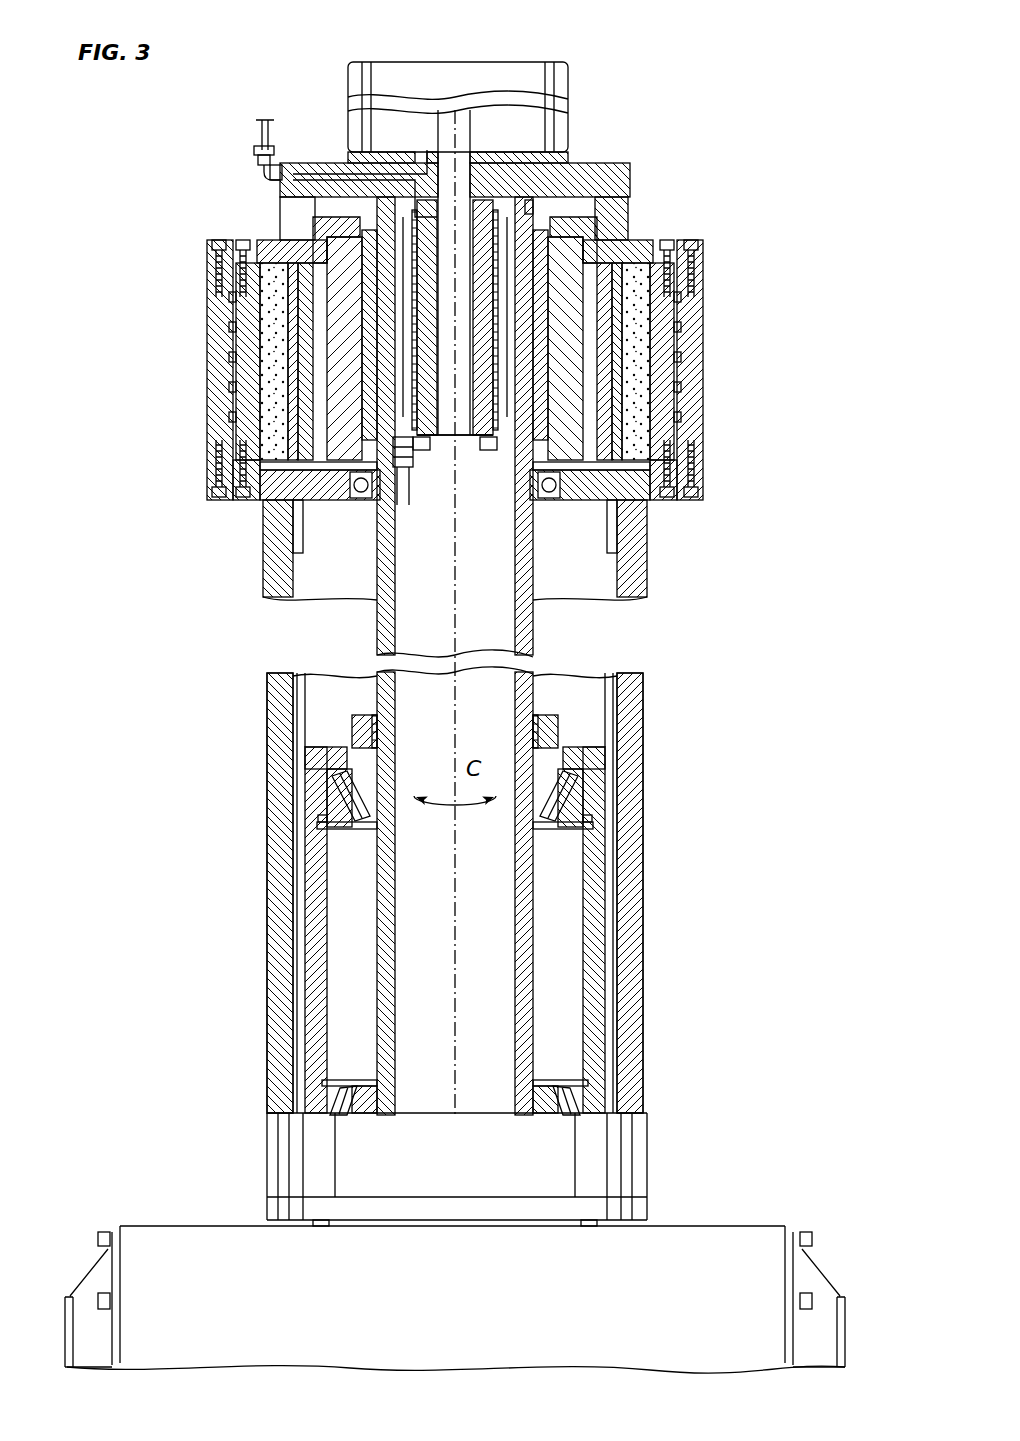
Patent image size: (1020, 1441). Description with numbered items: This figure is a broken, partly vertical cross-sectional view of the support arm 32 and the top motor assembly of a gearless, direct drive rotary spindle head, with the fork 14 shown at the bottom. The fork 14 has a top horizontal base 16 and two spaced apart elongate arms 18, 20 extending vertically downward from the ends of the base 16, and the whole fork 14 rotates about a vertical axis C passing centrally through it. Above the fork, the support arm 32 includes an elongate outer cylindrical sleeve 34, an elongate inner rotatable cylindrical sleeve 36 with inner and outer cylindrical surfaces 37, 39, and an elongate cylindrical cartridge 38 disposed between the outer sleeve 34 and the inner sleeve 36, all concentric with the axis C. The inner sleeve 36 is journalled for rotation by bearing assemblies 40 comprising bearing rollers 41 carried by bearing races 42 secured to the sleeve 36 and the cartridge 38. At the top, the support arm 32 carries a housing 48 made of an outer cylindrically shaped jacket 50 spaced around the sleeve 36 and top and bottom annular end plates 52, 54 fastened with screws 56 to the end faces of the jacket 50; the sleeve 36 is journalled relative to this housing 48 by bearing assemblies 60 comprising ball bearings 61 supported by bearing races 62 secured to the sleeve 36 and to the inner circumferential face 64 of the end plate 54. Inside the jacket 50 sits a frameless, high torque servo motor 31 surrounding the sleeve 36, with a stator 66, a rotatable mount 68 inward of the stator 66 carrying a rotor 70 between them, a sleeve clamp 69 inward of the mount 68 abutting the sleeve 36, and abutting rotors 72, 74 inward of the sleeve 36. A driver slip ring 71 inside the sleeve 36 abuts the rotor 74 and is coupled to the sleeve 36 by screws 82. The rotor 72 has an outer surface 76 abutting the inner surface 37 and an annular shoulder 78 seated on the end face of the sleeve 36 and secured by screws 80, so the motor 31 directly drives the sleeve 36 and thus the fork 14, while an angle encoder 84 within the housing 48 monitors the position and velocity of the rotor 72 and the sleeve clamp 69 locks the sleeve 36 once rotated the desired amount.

The fork 14 is at (731, 1220).
The top horizontal base 16 is at (702, 1224).
The elongate arm 18 is at (836, 1293).
The elongate arm 20 is at (66, 1297).
The frameless high torque servo motor 31 is at (238, 420).
The support arm 32 is at (652, 791).
The outer cylindrical sleeve 34 is at (647, 917).
The inner rotatable cylindrical sleeve 36 is at (620, 905).
The inner cylindrical surface 37 is at (520, 1057).
The cylindrical cartridge 38 is at (612, 977).
The outer cylindrical surface 39 is at (610, 950).
The bearing assembly 40 is at (333, 755).
The bearing roller 41 is at (350, 797).
The bearing race 42 is at (367, 813).
The housing 48 is at (292, 207).
The outer cylindrically shaped jacket 50 is at (207, 397).
The top annular end plate 52 is at (644, 236).
The bottom annular end plate 54 is at (573, 507).
The screws 56 is at (217, 238).
The bearing assembly 60 is at (546, 512).
The ball bearing 61 is at (646, 566).
The bearing race 62 is at (547, 507).
The inner circumferential face 64 is at (547, 433).
The stator 66 is at (305, 320).
The rotatable mount 68 is at (337, 372).
The sleeve clamp 69 is at (220, 290).
The rotatable rotor 70 is at (358, 294).
The driver slip ring 71 is at (413, 452).
The rotor 72 is at (535, 392).
The rotor 74 is at (365, 410).
The outer surface 76 is at (535, 380).
The annular shoulder 78 is at (393, 183).
The screws 80 is at (337, 178).
The screws 82 is at (380, 603).
The angle encoder 84 is at (275, 190).